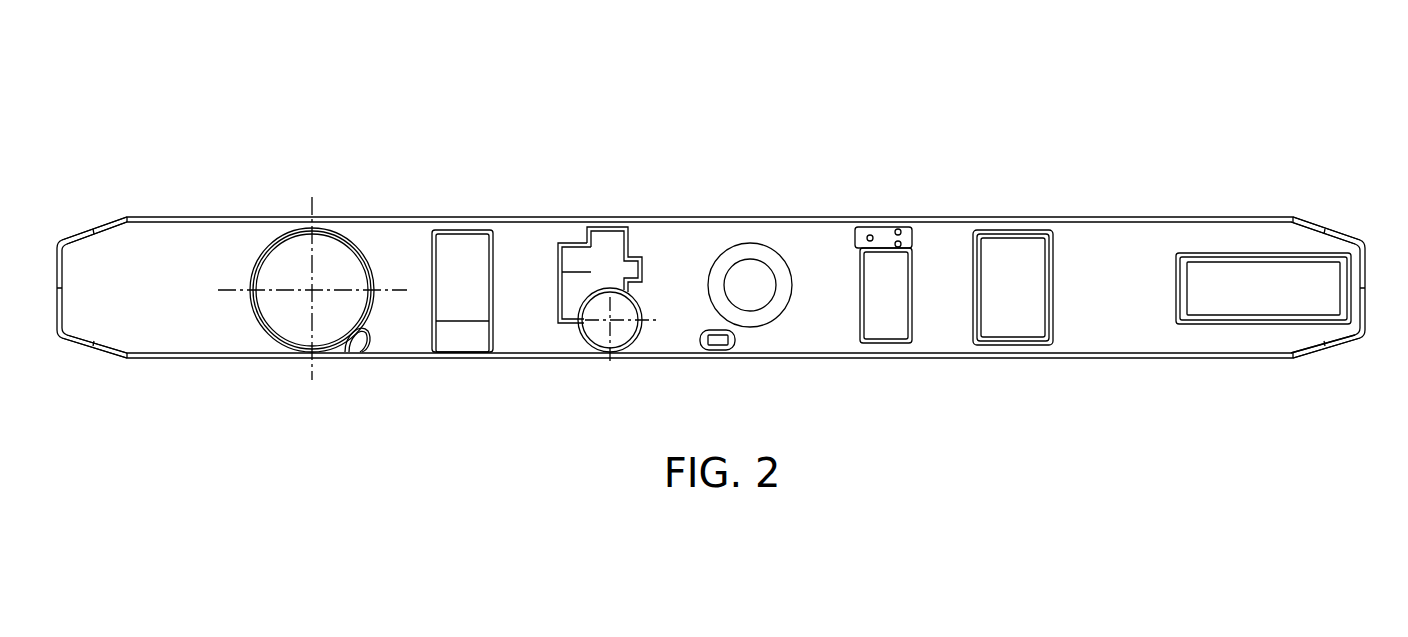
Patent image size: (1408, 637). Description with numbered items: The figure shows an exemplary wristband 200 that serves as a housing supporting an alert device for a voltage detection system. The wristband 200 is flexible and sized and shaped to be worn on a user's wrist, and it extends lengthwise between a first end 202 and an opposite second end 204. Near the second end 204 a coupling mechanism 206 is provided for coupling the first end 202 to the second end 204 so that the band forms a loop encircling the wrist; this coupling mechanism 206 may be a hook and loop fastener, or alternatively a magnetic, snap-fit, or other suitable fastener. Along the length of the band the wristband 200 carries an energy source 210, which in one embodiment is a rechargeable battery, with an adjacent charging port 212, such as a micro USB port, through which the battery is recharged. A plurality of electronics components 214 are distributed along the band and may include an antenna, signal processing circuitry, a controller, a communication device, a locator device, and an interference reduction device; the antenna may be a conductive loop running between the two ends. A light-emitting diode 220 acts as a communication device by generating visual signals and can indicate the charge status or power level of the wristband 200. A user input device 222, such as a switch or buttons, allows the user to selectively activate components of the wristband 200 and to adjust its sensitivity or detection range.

The wristband 200 is at (1282, 105).
The first end 202 is at (82, 235).
The second end 204 is at (1342, 238).
The coupling mechanism 206 is at (1252, 297).
The energy source 210 is at (333, 262).
The charging port 212 is at (465, 263).
The electronics components 214 is at (605, 260).
The light-emitting diode (LED) 220 is at (715, 353).
The user input device 222 is at (750, 278).